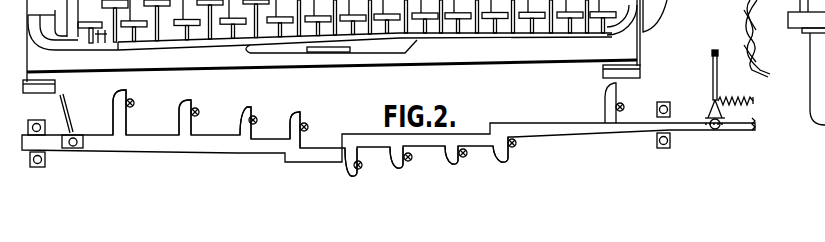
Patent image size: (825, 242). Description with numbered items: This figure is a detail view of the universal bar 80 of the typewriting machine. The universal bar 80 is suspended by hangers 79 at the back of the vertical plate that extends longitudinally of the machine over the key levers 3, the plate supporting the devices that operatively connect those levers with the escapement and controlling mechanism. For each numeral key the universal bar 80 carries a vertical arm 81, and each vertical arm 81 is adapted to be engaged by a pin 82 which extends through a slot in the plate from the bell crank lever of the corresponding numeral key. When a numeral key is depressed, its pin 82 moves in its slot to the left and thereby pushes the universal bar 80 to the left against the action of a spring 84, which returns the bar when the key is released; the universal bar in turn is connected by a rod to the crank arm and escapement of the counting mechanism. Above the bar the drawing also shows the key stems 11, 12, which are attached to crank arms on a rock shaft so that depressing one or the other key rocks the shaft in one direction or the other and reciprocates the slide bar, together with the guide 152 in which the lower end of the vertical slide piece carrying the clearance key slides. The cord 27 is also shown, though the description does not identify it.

The key levers 3 is at (208, 34).
The key stem 11 is at (67, 20).
The key stem 12 is at (106, 41).
The flexible cord 27 is at (737, 38).
The hangers 79 is at (65, 110).
The universal bar 80 is at (157, 150).
The vertical arm 81 is at (127, 113).
The pin 82 is at (247, 115).
The spring 84 is at (738, 105).
The guide 152 is at (598, 15).